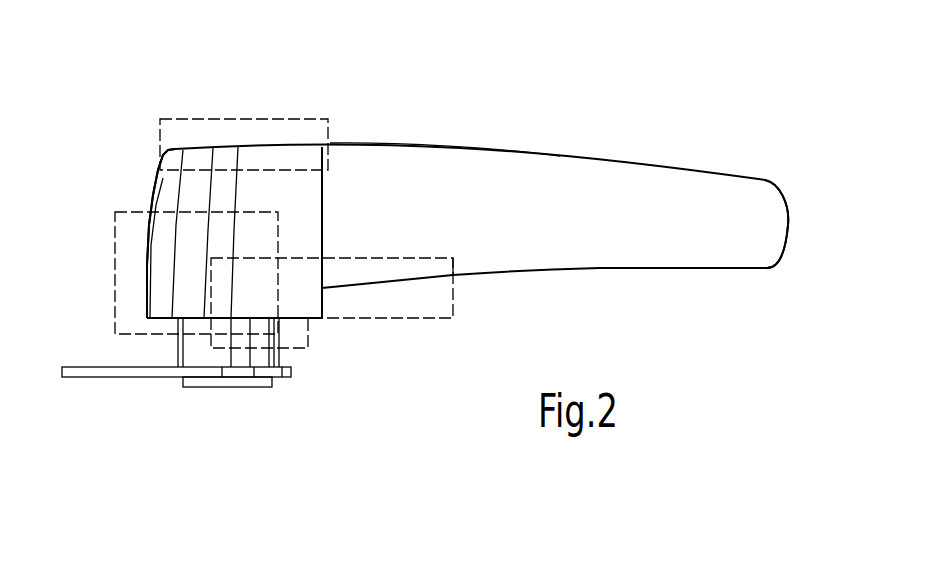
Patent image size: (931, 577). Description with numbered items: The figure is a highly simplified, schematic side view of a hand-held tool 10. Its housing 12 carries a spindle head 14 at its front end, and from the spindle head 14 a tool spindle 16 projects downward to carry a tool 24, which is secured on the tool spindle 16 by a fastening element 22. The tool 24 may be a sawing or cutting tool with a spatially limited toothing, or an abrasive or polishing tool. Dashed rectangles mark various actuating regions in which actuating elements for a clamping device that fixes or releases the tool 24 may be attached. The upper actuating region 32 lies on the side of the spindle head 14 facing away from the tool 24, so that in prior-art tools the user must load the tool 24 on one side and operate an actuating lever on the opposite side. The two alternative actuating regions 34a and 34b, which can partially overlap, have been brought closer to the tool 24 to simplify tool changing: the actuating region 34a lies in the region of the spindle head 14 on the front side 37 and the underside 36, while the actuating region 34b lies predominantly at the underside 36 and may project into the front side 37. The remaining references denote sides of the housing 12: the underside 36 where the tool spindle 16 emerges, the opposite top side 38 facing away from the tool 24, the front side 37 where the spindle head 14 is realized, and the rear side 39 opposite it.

The hand-held tool 10 is at (622, 111).
The housing 12 is at (512, 201).
The spindle head 14 is at (158, 186).
The tool spindle 16 is at (195, 352).
The fastening element 22 is at (260, 384).
The tool 24 is at (150, 377).
The upper actuating region 32 is at (262, 118).
The actuating region 34a is at (115, 280).
The actuating region 34b is at (453, 293).
The underside 36 is at (396, 280).
The front side 37 is at (145, 240).
The top side 38 is at (459, 145).
The rear side 39 is at (790, 222).